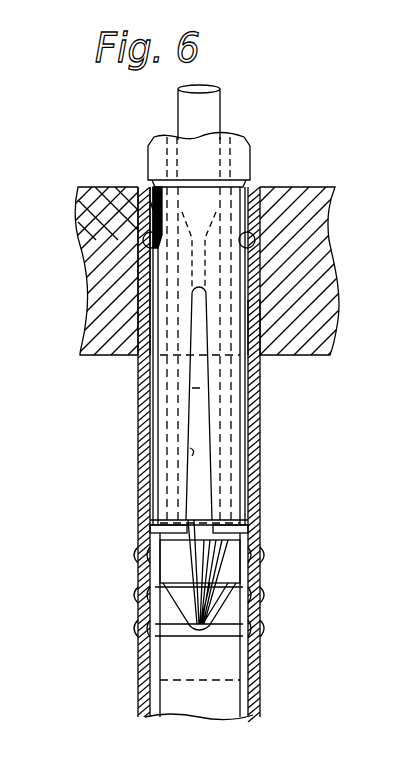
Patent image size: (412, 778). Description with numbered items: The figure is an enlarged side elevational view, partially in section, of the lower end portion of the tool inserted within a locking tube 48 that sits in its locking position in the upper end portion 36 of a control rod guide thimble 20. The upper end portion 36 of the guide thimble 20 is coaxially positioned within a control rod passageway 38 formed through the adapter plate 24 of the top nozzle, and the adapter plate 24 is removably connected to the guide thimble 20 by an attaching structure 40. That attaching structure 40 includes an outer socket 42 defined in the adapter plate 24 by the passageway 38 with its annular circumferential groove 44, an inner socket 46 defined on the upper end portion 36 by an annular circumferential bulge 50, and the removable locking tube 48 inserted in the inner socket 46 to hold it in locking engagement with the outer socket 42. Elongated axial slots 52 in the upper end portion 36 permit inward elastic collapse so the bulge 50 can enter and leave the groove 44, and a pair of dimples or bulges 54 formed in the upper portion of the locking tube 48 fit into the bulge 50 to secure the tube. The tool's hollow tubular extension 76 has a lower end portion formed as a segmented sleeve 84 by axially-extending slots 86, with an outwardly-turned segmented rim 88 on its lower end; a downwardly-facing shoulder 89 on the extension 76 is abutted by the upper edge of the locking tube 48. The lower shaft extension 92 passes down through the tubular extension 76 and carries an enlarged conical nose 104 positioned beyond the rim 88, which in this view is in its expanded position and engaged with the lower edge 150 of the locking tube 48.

The lower shaft extension 92 is at (222, 106).
The hollow tubular extension 76 is at (250, 146).
The outer socket 42 is at (254, 181).
The downwardly-facing ledge or shoulder 89 is at (148, 182).
The removable locking tube 48 is at (143, 203).
The annular circumferential bulge 50 is at (147, 204).
The lower adapter plate 24 is at (82, 241).
The dimples or bulges 54 is at (143, 250).
The inner socket 46 is at (131, 303).
The elongated axial slot 52 is at (206, 216).
The annular circumferential groove 44 is at (259, 242).
The attaching structure 40 is at (293, 304).
The control rod passageway 38 is at (260, 331).
The upper end portion of guide thimble 36 is at (259, 433).
The control rod guide thimble 20 is at (266, 477).
The segmented sleeve 84 is at (163, 430).
The axially-extending slot 86 is at (192, 452).
The segmented flange or rim 88 is at (158, 530).
The lower edge of locking tube 150 is at (258, 527).
The enlarged conical nose 104 is at (243, 574).